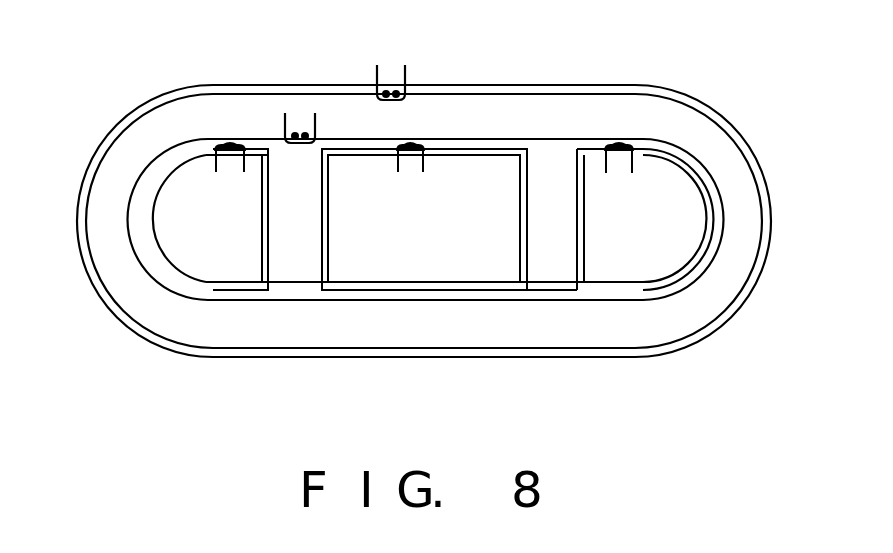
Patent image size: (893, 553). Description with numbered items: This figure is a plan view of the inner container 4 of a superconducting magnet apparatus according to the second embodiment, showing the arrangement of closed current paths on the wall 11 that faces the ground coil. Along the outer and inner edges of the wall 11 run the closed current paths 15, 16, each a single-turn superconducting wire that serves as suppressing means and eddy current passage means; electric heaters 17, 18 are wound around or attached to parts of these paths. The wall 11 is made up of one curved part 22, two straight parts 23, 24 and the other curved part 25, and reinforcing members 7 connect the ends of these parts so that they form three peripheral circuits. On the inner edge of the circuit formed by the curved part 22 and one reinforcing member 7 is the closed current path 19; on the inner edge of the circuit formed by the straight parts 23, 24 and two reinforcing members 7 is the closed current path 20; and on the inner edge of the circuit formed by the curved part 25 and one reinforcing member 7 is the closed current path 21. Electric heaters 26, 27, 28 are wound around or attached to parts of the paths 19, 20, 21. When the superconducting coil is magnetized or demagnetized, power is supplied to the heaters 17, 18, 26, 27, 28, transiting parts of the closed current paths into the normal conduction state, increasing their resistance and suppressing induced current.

The inner container 4 is at (606, 80).
The reinforcing member 7 is at (308, 250).
The wall 11 is at (288, 330).
The closed current path 15 is at (487, 88).
The closed current path 16 is at (535, 138).
The electric heater 17 is at (388, 78).
The electric heater 18 is at (297, 123).
The closed current path 19 is at (148, 226).
The closed current path 20 is at (318, 212).
The closed current path 21 is at (578, 216).
The curved part 22 is at (94, 238).
The straight part 23 is at (433, 108).
The straight part 24 is at (420, 330).
The curved part 25 is at (748, 218).
The electric heater 26 is at (233, 160).
The electric heater 27 is at (410, 167).
The electric heater 28 is at (620, 168).